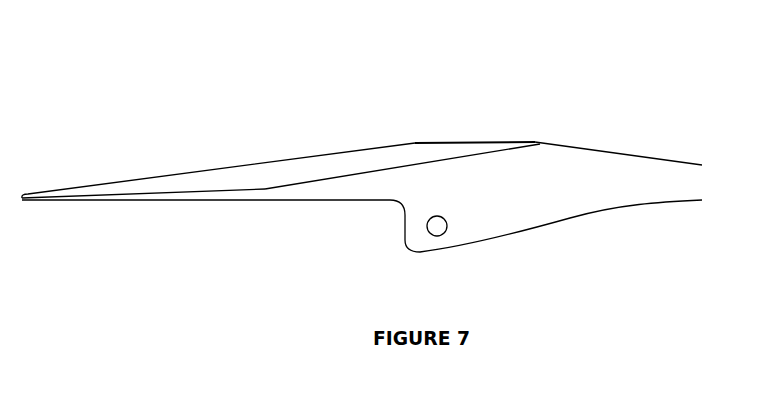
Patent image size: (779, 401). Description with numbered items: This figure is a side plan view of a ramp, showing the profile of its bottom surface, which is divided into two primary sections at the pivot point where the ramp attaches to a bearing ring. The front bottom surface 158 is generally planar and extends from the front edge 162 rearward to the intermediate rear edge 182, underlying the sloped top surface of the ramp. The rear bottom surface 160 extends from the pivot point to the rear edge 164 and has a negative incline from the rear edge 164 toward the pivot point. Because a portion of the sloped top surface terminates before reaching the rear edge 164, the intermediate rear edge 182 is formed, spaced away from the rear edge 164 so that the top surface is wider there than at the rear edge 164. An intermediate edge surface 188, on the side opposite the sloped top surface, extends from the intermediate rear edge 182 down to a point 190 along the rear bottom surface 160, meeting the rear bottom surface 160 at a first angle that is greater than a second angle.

The front bottom surface 158 is at (160, 199).
The rear bottom surface 160 is at (572, 216).
The front edge 162 is at (4, 57).
The rear edge 164 is at (703, 185).
The intermediate rear edge 182 is at (535, 142).
The intermediate edge surface 188 is at (397, 167).
The point 190 is at (193, 199).